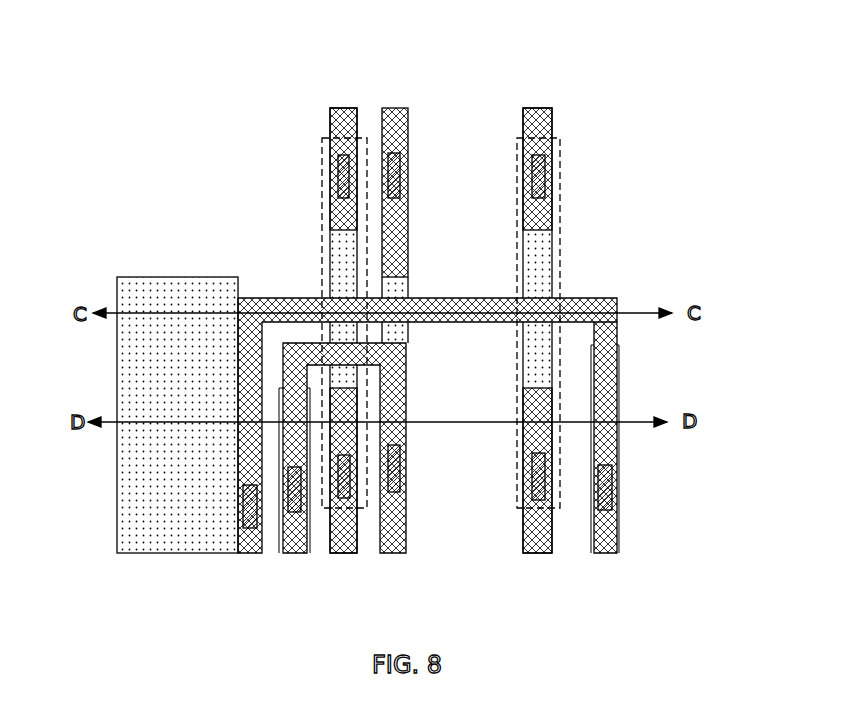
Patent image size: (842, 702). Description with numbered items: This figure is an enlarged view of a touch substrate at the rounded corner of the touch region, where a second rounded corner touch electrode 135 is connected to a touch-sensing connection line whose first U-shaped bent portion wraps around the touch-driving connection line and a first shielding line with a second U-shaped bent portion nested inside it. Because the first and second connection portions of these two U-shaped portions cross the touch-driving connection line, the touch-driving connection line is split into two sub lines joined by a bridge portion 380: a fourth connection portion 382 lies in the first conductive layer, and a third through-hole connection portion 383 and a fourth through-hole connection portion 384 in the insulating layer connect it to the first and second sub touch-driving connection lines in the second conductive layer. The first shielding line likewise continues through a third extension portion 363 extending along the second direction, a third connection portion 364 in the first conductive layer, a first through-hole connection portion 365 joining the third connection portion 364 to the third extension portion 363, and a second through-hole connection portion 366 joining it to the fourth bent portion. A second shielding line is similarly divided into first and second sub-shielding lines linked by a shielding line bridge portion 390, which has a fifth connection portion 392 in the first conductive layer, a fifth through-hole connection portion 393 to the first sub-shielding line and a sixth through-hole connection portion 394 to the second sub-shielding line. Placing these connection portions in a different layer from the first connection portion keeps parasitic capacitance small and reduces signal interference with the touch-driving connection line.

The second rounded corner touch electrode 135 is at (153, 455).
The third extension portion 363 is at (437, 173).
The third connection portion 364 is at (434, 275).
The first through-hole connection portion 365 is at (434, 191).
The second through-hole connection portion 366 is at (439, 523).
The bridge portion 380 is at (284, 301).
The fourth connection portion 382 is at (273, 217).
The third through-hole connection portion 383 is at (302, 495).
The fourth through-hole connection portion 384 is at (285, 140).
The shielding line bridge portion 390 is at (584, 323).
The fifth connection portion 392 is at (587, 253).
The fifth through-hole connection portion 393 is at (580, 494).
The sixth through-hole connection portion 394 is at (579, 160).